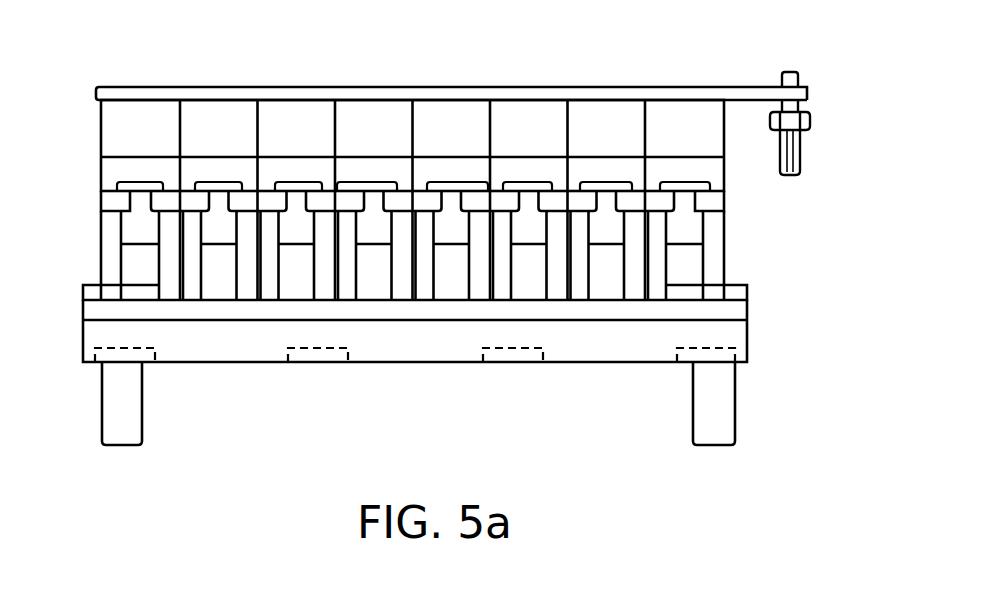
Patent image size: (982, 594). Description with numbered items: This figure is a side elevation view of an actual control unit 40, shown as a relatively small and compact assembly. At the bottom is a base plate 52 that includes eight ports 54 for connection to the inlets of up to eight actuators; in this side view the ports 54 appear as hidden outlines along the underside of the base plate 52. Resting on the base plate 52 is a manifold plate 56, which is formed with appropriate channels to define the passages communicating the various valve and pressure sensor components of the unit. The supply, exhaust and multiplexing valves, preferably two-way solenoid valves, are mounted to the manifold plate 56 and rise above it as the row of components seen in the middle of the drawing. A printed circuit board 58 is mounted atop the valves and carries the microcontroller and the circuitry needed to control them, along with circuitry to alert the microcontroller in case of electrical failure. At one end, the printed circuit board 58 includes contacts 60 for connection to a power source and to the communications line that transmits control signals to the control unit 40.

The control unit 40 is at (308, 68).
The printed circuit board 58 is at (604, 92).
The contacts 60 is at (812, 122).
The manifold plate 56 is at (727, 310).
The base plate 52 is at (748, 337).
The ports 54 is at (307, 356).